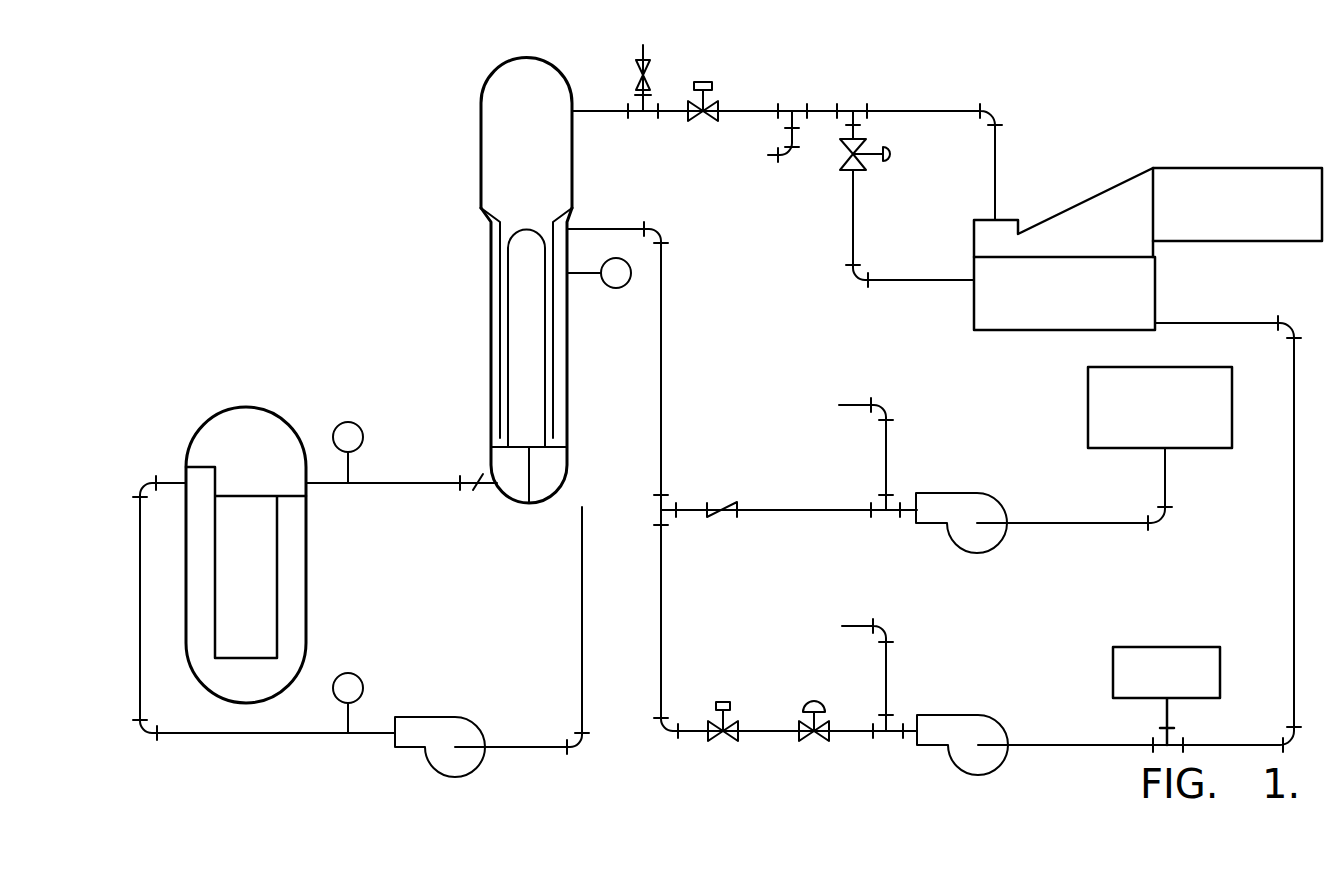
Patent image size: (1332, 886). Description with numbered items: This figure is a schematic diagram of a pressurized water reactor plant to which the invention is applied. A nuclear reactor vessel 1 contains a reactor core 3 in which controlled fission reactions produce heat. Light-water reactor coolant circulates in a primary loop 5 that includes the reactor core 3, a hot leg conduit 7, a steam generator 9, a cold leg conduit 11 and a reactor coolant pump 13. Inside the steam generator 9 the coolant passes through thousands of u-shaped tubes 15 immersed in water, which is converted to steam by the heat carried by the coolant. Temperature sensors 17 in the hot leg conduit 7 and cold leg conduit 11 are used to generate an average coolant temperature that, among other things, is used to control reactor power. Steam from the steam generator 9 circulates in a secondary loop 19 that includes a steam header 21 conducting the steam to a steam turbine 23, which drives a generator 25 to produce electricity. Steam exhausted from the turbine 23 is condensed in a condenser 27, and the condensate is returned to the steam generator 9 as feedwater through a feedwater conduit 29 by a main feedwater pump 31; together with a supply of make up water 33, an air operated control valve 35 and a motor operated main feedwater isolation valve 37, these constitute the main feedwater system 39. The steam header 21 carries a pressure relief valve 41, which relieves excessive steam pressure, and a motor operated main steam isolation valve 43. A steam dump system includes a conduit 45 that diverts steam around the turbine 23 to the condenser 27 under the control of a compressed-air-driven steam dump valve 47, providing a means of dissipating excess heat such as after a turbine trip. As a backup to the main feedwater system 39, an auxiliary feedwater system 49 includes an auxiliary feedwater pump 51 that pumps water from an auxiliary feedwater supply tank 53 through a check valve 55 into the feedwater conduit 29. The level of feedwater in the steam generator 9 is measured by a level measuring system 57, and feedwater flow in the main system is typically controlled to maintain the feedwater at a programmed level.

The nuclear reactor vessel 1 is at (277, 411).
The reactor core 3 is at (277, 543).
The primary loop 5 is at (438, 589).
The hot leg conduit 7 is at (380, 483).
The steam generator 9 is at (491, 301).
The cold leg conduit 11 is at (378, 733).
The reactor coolant pump 13 is at (437, 717).
The u-shaped tubes 15 is at (508, 265).
The temperature sensors 17 is at (353, 424).
The secondary loop 19 is at (771, 250).
The steam header 21 is at (793, 104).
The steam turbine 23 is at (1093, 196).
The generator 25 is at (1200, 168).
The condenser 27 is at (1093, 257).
The feedwater conduit 29 is at (665, 727).
The main feedwater pump 31 is at (965, 715).
The make up water supply 33 is at (1158, 647).
The air operated control valve 35 is at (830, 722).
The motor operated main feedwater isolation valve 37 is at (740, 722).
The main feedwater system 39 is at (883, 774).
The pressure relief valve 41 is at (636, 62).
The motor operated main steam isolation valve 43 is at (715, 103).
The steam dump conduit 45 is at (885, 280).
The steam dump valve 47 is at (860, 172).
The auxiliary feedwater system 49 is at (995, 421).
The auxiliary feedwater pump 51 is at (960, 493).
The auxiliary feedwater supply tank 53 is at (1207, 450).
The check valve 55 is at (737, 518).
The level measuring system 57 is at (616, 289).